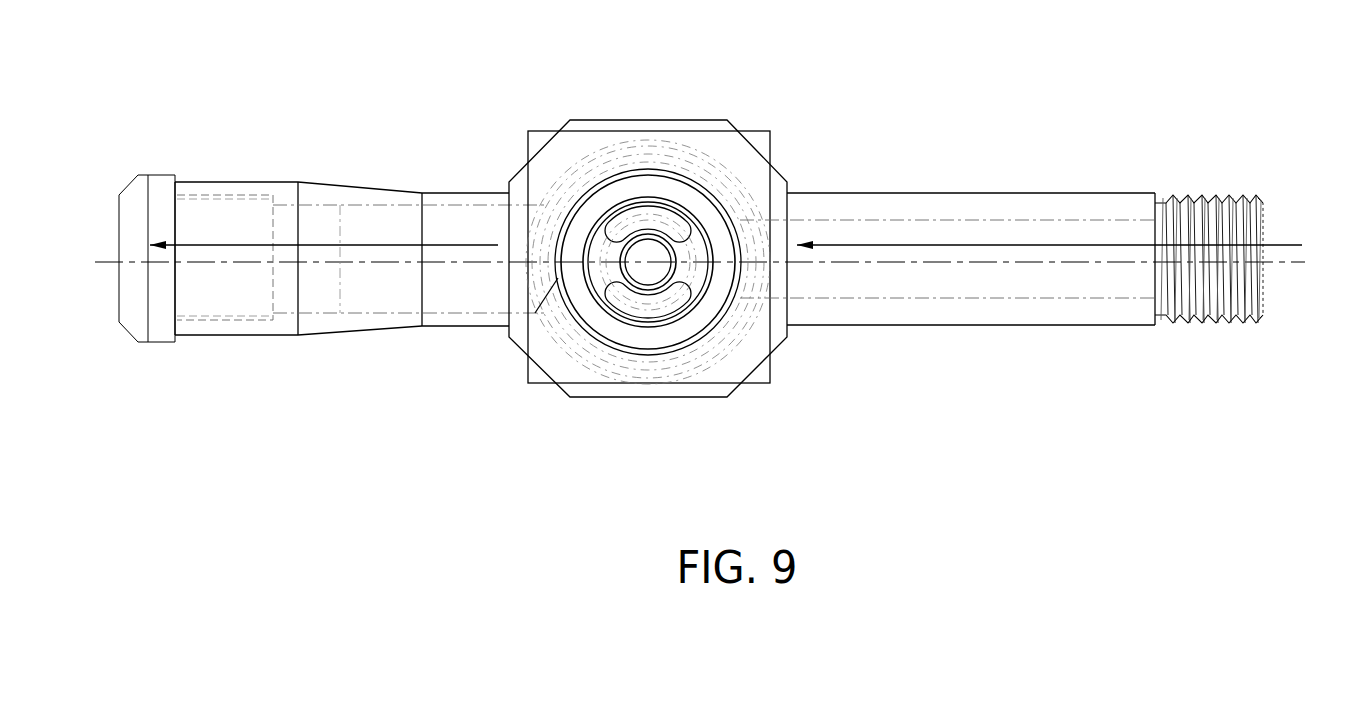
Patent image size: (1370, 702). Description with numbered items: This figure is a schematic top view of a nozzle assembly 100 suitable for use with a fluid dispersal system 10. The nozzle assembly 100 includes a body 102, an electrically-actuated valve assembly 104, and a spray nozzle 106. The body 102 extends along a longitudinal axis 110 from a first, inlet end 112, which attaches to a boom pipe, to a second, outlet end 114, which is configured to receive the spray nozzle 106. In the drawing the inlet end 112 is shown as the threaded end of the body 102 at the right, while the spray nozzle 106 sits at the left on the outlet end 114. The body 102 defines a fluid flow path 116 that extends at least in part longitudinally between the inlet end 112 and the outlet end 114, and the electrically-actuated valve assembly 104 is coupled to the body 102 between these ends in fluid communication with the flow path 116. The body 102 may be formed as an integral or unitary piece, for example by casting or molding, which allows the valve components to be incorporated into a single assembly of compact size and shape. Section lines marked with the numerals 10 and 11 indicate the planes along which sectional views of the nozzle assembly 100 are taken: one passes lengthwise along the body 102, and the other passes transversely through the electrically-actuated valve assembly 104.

The fluid dispersal system 10 is at (1338, 298).
The line 11- 11 is at (587, 460).
The nozzle assembly 100 is at (295, 140).
The body 102 is at (323, 183).
The electrically-actuated valve assembly 104 is at (528, 131).
The spray nozzle 106 is at (158, 175).
The longitudinal axis 110 is at (1060, 263).
The first, inlet end 112 is at (1258, 292).
The second, outlet end 114 is at (175, 337).
The fluid flow path 116 is at (997, 245).